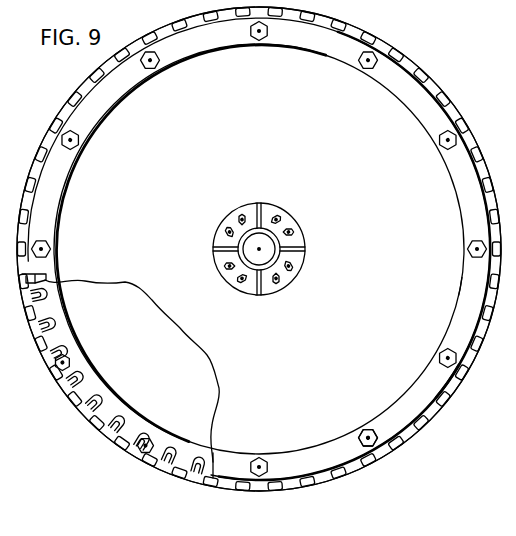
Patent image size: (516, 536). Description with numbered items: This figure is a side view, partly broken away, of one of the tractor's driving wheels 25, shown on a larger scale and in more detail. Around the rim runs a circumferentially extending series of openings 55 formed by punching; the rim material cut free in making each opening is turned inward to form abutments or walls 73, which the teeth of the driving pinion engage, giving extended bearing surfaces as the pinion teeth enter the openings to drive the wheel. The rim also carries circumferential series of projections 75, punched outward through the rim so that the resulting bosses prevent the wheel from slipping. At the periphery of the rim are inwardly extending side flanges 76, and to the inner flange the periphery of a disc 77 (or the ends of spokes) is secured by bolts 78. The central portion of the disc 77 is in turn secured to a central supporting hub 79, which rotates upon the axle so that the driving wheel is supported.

The driving wheel 25 is at (450, 108).
The openings 55 is at (99, 431).
The abutments or walls 73 is at (87, 390).
The projections 75 is at (441, 401).
The side flanges 76 is at (465, 297).
The disc 77 is at (210, 364).
The bolts 78 is at (368, 432).
The central supporting hub 79 is at (274, 243).